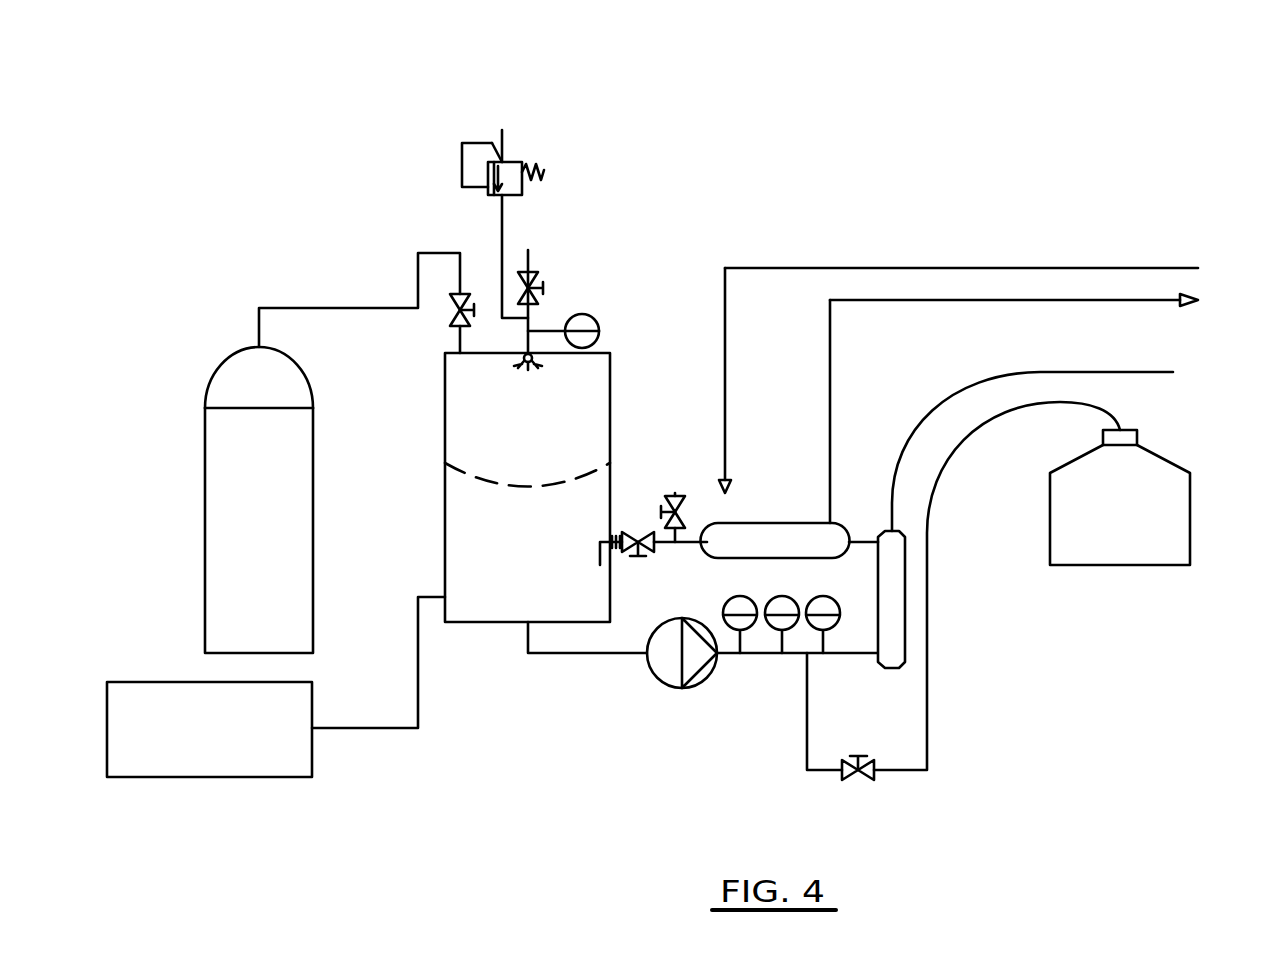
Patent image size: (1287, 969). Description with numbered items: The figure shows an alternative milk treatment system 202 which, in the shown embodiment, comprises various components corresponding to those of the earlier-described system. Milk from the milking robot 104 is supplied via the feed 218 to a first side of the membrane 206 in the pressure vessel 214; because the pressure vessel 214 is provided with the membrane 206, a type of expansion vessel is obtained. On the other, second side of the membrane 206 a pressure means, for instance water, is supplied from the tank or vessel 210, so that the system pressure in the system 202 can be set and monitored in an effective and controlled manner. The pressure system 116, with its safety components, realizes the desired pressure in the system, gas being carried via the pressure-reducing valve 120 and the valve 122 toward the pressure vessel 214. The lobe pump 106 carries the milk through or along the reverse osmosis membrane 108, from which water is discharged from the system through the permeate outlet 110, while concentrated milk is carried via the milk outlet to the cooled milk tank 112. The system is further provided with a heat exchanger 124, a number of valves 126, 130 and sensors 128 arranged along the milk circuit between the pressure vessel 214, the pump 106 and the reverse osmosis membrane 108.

The milking robot 104 is at (150, 697).
The lobe pump 106 is at (660, 668).
The reverse osmosis membrane 108 is at (890, 655).
The permeate outlet 110 is at (1152, 370).
The cooled milk tank 112 is at (1175, 533).
The pressure system 116 is at (570, 102).
The pressure-reducing valve 120 is at (362, 300).
The valve 122 is at (455, 325).
The heat exchanger 124 is at (755, 520).
The valve 126 is at (661, 470).
The sensors 128 is at (700, 598).
The valve 130 is at (868, 778).
The alternative system 202 is at (850, 125).
The membrane 206 is at (552, 484).
The tank or vessel 210 is at (222, 468).
The pressure vessel 214 is at (483, 608).
The feed 218 is at (418, 613).